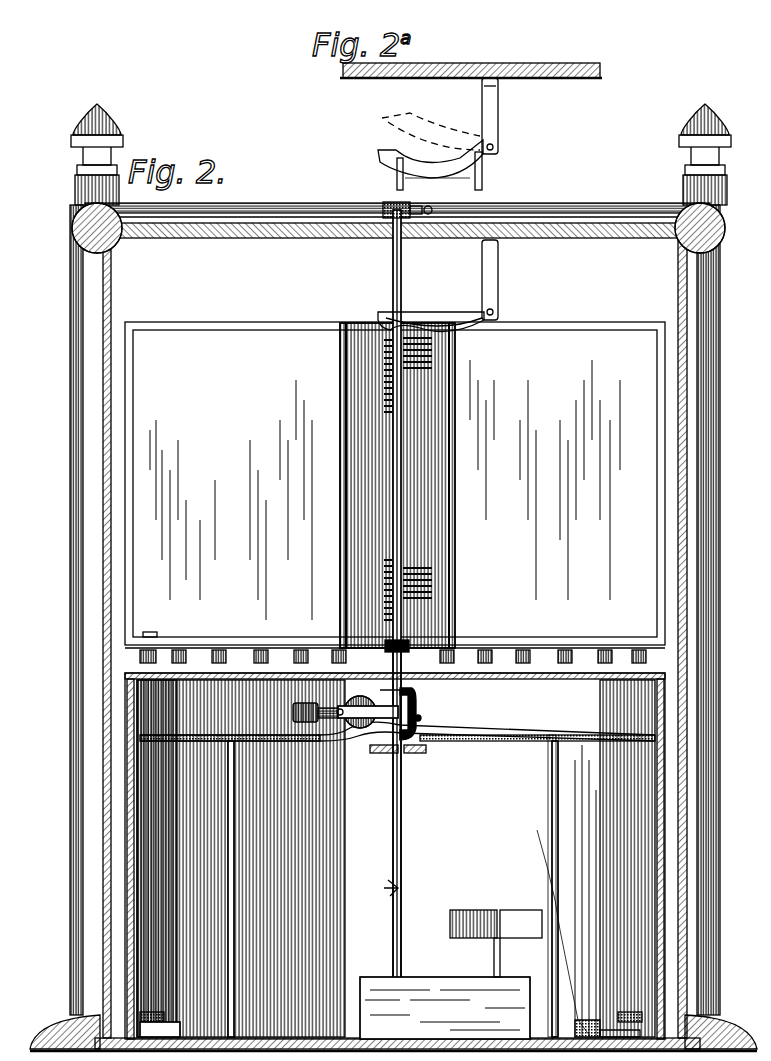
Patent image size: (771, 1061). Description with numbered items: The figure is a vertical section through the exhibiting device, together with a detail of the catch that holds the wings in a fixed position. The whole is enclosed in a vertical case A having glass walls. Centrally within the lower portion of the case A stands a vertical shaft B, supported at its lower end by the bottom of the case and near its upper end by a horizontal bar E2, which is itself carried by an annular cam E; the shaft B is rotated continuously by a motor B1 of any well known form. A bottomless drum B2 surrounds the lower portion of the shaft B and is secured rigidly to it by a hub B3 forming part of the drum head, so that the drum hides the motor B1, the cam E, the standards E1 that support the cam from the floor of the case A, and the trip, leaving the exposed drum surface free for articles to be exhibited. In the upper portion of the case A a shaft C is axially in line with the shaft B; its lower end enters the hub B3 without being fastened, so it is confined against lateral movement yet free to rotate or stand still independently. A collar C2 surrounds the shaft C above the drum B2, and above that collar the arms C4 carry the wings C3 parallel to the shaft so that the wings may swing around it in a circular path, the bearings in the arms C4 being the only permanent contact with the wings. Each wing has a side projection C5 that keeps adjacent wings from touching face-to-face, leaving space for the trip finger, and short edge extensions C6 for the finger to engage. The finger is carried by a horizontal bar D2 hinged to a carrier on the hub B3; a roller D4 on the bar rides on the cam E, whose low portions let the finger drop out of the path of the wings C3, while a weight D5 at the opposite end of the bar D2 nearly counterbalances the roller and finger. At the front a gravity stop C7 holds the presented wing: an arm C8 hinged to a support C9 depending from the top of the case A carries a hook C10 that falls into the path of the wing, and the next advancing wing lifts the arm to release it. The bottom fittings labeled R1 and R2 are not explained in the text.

In FIG. 2A, the vertical case A is at (471, 84).
In FIG. 2, the vertical case A is at (70, 578).
In FIG. 2, the vertical shaft B is at (402, 818).
In FIG. 2, the motor B1 is at (451, 974).
In FIG. 2, the drum B2 is at (389, 878).
In FIG. 2, the hub B3 is at (422, 720).
In FIG. 2, the shaft C is at (393, 273).
In FIG. 2, the collar C2 is at (431, 208).
In FIG. 2, the wings C3 is at (395, 456).
In FIG. 2, the arms C4 is at (392, 392).
In FIG. 2, the projection C5 is at (148, 646).
In FIG. 2, the extensions C6 is at (258, 655).
In FIG. 2A, the gravity stop C7 is at (455, 164).
In FIG. 2, the gravity stop C7 is at (386, 313).
In FIG. 2A, the arm C8 is at (437, 183).
In FIG. 2, the arm C8 is at (437, 318).
In FIG. 2A, the support C9 is at (498, 112).
In FIG. 2, the support C9 is at (498, 290).
In FIG. 2A, the hook C10 is at (380, 152).
In FIG. 2, the horizontal bar D2 is at (416, 698).
In FIG. 2, the roller D4 is at (352, 708).
In FIG. 2, the weight D5 is at (300, 704).
In FIG. 2, the annular cam E is at (508, 742).
In FIG. 2, the standards E1 is at (605, 1030).
In FIG. 2, the horizontal bar E2 is at (432, 768).
In FIG. 2, the roller R1 is at (624, 1012).
In FIG. 2, the roller R2 is at (160, 1012).